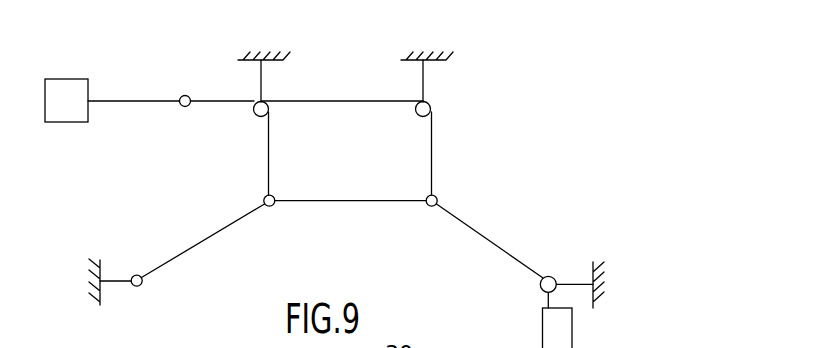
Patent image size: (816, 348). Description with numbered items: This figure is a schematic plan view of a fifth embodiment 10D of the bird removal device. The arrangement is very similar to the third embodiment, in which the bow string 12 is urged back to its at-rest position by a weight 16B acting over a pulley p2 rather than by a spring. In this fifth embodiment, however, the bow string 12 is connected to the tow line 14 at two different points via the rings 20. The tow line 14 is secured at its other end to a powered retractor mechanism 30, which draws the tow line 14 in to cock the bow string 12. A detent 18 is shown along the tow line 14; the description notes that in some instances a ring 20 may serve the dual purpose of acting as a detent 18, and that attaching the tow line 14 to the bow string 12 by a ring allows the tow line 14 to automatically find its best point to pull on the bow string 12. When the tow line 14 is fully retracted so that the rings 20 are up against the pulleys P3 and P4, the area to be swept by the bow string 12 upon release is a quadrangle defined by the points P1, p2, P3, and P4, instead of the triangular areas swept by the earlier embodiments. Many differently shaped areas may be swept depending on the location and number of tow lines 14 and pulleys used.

The fifth embodiment 10D is at (562, 60).
The powered retractor mechanism 30 is at (63, 88).
The detent 18 is at (185, 96).
The pulley P3 is at (270, 98).
The pulley P4 is at (433, 103).
The tow line 14 is at (343, 100).
The rings 20 is at (272, 195).
The point P1 is at (134, 274).
The bow string 12 is at (488, 234).
The pulley P2 p2 is at (555, 279).
The weight 16B is at (573, 341).